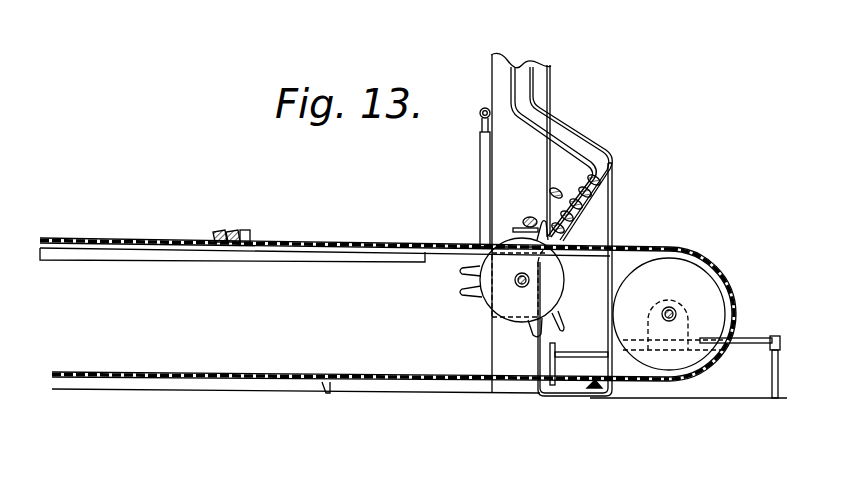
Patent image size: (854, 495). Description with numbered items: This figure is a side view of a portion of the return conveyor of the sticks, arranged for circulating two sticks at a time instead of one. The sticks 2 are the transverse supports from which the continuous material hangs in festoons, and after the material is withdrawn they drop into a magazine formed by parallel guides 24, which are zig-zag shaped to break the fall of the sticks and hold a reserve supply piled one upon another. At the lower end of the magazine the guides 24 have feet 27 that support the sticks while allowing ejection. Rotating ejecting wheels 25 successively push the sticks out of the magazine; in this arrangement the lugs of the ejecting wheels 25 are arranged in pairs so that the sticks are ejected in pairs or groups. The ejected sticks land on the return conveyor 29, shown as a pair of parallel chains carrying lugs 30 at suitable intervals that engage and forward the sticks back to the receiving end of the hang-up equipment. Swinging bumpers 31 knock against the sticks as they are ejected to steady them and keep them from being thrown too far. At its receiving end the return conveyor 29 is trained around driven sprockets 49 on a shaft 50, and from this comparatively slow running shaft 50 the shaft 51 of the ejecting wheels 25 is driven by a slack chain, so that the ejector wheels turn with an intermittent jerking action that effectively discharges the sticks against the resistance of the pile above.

The sticks 2 is at (231, 230).
The lugs 30 is at (249, 232).
The return conveyor 29 is at (432, 245).
The swinging bumpers 31 is at (484, 162).
The feet 27 is at (521, 215).
The magazine guides 24 is at (592, 153).
The ejecting wheels 25 is at (517, 316).
The shaft 51 is at (519, 285).
The driven sprockets 49 is at (674, 314).
The shaft 50 is at (673, 313).